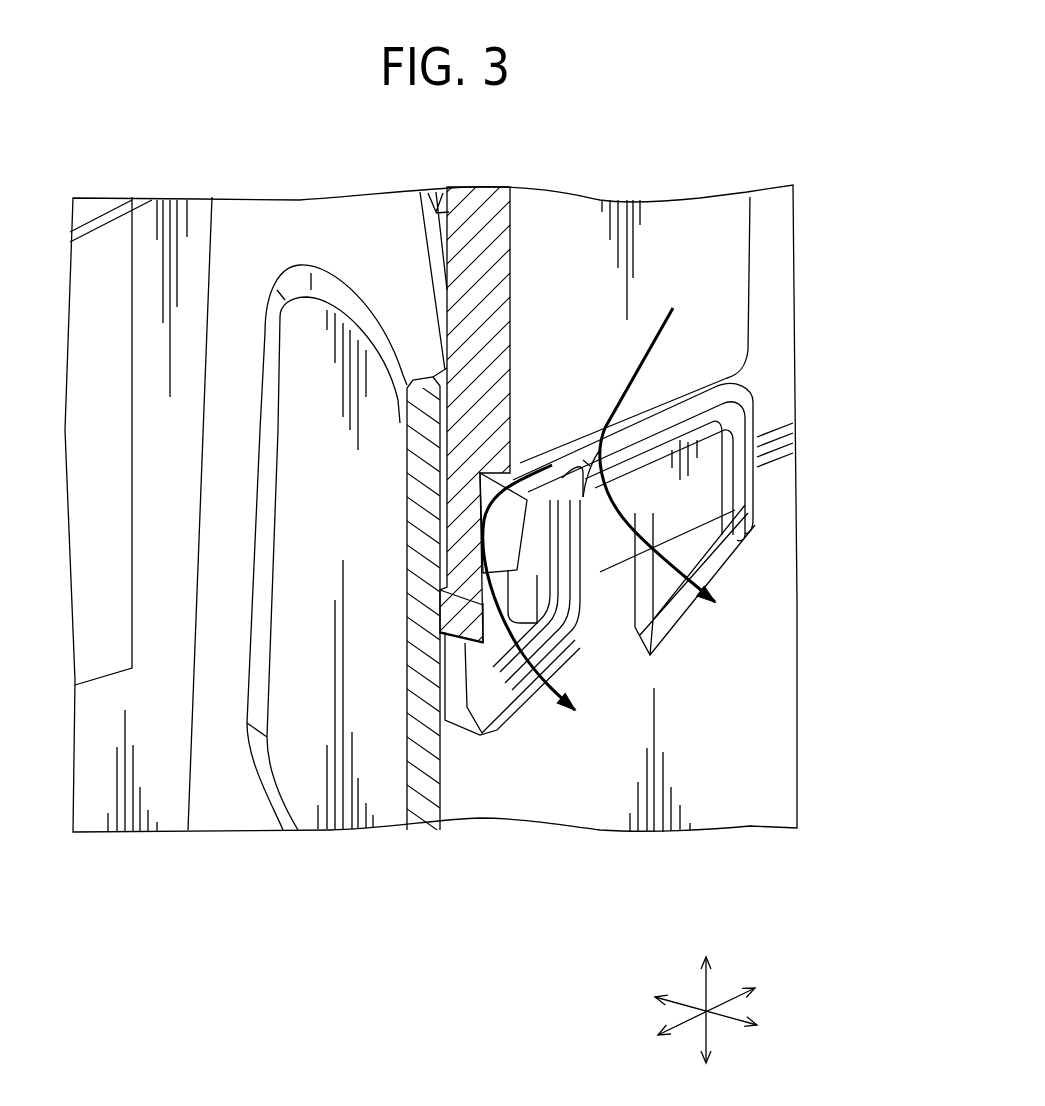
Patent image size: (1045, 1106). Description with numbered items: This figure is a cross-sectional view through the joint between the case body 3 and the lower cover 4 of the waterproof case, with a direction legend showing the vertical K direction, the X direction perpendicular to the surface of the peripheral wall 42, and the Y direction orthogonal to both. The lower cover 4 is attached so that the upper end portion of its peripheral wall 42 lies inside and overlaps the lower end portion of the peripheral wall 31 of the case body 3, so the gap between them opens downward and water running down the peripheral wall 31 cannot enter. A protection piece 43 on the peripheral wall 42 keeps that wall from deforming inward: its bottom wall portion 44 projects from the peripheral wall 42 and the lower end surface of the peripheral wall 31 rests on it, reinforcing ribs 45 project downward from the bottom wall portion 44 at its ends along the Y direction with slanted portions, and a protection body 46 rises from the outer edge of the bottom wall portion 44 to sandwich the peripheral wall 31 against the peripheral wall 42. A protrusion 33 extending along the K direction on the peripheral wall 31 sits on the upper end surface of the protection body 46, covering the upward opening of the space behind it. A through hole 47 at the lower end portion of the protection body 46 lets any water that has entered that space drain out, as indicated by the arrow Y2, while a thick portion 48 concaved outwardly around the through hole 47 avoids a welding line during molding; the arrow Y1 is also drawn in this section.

The case body 3 is at (705, 195).
The lower cover 4 is at (797, 720).
The peripheral wall 31 is at (772, 291).
The protrusion 33 is at (733, 347).
The peripheral wall 42 is at (407, 768).
The protection piece 43 is at (763, 507).
The bottom wall portion 44 is at (458, 625).
The reinforcing ribs 45 is at (683, 623).
The protection body 46 is at (705, 466).
The through hole 47 is at (733, 398).
The thick portion 48 is at (583, 460).
The insertion direction Y1 is at (661, 325).
The arrow Y2 is at (542, 467).
The K direction K is at (707, 992).
The X direction X is at (684, 1008).
The Y direction Y is at (733, 1000).